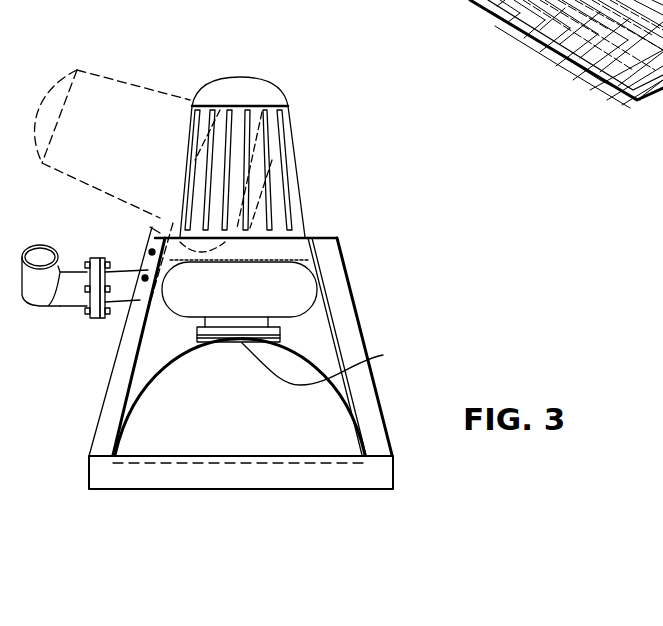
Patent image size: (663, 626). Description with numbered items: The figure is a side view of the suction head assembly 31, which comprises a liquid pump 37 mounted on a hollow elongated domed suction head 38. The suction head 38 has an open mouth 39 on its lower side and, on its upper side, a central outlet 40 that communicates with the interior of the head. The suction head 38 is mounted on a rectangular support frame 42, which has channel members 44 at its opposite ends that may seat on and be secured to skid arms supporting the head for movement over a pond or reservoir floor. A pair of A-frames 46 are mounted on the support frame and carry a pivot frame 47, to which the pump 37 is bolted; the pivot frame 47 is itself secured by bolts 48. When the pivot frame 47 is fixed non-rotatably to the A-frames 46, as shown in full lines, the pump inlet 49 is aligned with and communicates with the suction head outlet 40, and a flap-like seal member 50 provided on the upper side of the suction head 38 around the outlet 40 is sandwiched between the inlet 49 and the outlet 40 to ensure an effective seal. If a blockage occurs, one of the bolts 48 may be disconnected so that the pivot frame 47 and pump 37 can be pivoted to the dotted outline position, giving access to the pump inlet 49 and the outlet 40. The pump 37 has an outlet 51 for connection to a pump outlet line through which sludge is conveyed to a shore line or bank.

The suction head assembly 31 is at (342, 218).
The liquid pump 37 is at (128, 83).
The suction head 38 is at (147, 418).
The open mouth 39 is at (240, 465).
The central outlet 40 is at (323, 364).
The rectangular support frame 42 is at (160, 488).
The channel members 44 is at (367, 458).
The A-frames 46 is at (352, 287).
The pivot frame 47 is at (157, 223).
The bolts 48 is at (144, 277).
The pump inlet 49 is at (260, 188).
The seal member 50 is at (197, 342).
The pump outlet 51 is at (42, 257).